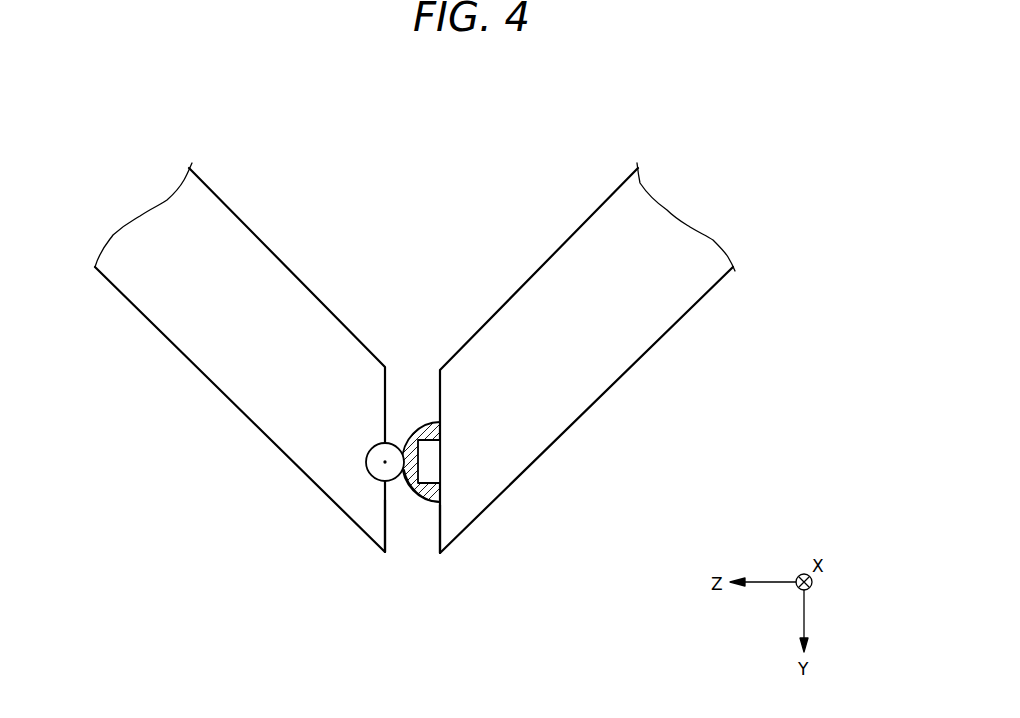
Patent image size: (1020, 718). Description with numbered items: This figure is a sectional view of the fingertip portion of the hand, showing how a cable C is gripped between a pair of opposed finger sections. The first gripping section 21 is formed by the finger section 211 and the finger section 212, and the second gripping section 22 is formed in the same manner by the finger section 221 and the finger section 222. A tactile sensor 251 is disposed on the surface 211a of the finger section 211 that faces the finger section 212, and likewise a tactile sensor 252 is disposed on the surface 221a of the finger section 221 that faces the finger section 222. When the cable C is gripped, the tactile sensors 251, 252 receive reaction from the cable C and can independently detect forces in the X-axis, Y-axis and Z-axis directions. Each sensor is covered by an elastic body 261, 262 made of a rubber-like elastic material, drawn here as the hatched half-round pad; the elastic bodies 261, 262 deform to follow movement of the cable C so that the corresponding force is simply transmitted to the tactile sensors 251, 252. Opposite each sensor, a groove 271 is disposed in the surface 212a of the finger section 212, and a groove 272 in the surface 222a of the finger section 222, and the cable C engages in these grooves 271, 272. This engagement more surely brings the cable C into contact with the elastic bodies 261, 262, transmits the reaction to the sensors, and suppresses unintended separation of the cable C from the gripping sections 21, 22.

The first gripping section 21 is at (415, 361).
The second gripping section 22 is at (476, 146).
The finger section 211 is at (580, 338).
The finger section 221 is at (593, 253).
The finger section 212 is at (255, 393).
The finger section 222 is at (237, 253).
The surface 211a is at (534, 529).
The surface 221a is at (442, 517).
The surface 212a is at (380, 581).
The surface 222a is at (387, 529).
The elastic body 261 is at (453, 410).
The elastic body 262 is at (430, 422).
The groove 271 is at (295, 495).
The groove 272 is at (368, 457).
The tactile sensor 251 is at (461, 579).
The tactile sensor 252 is at (415, 500).
The cable C is at (385, 462).